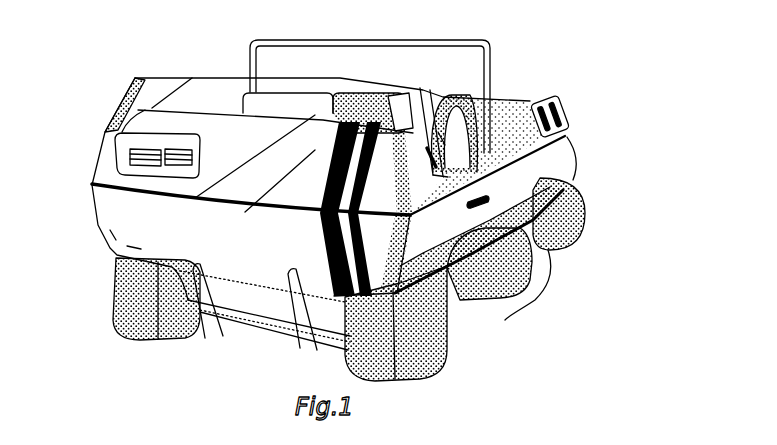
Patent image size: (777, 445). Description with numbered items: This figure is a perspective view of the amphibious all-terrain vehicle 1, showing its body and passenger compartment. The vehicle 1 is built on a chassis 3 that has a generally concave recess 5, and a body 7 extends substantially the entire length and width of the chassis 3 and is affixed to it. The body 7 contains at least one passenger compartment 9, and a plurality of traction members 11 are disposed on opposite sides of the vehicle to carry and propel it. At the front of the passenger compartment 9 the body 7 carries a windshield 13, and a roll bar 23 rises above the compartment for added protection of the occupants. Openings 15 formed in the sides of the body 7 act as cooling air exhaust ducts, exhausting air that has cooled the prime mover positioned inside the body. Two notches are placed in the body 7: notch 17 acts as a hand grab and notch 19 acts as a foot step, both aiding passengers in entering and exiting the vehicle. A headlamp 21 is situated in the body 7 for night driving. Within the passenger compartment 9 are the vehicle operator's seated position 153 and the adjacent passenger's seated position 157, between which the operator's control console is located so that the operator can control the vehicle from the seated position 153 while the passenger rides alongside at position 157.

The amphibious all-terrain vehicle 1 is at (268, 24).
The chassis 3 is at (283, 325).
The concave recess 5 is at (350, 209).
The body 7 is at (262, 280).
The passenger compartment 9 is at (443, 139).
The traction members 11 is at (128, 303).
The windshield 13 is at (160, 84).
The openings 15 is at (552, 104).
The notch (hand grab) 17 is at (443, 176).
The notch (foot step) 19 is at (478, 210).
The headlamp 21 is at (117, 151).
The roll bar 23 is at (312, 42).
The vehicle operators seated position 153 is at (447, 113).
The passengers seated position 157 is at (312, 100).